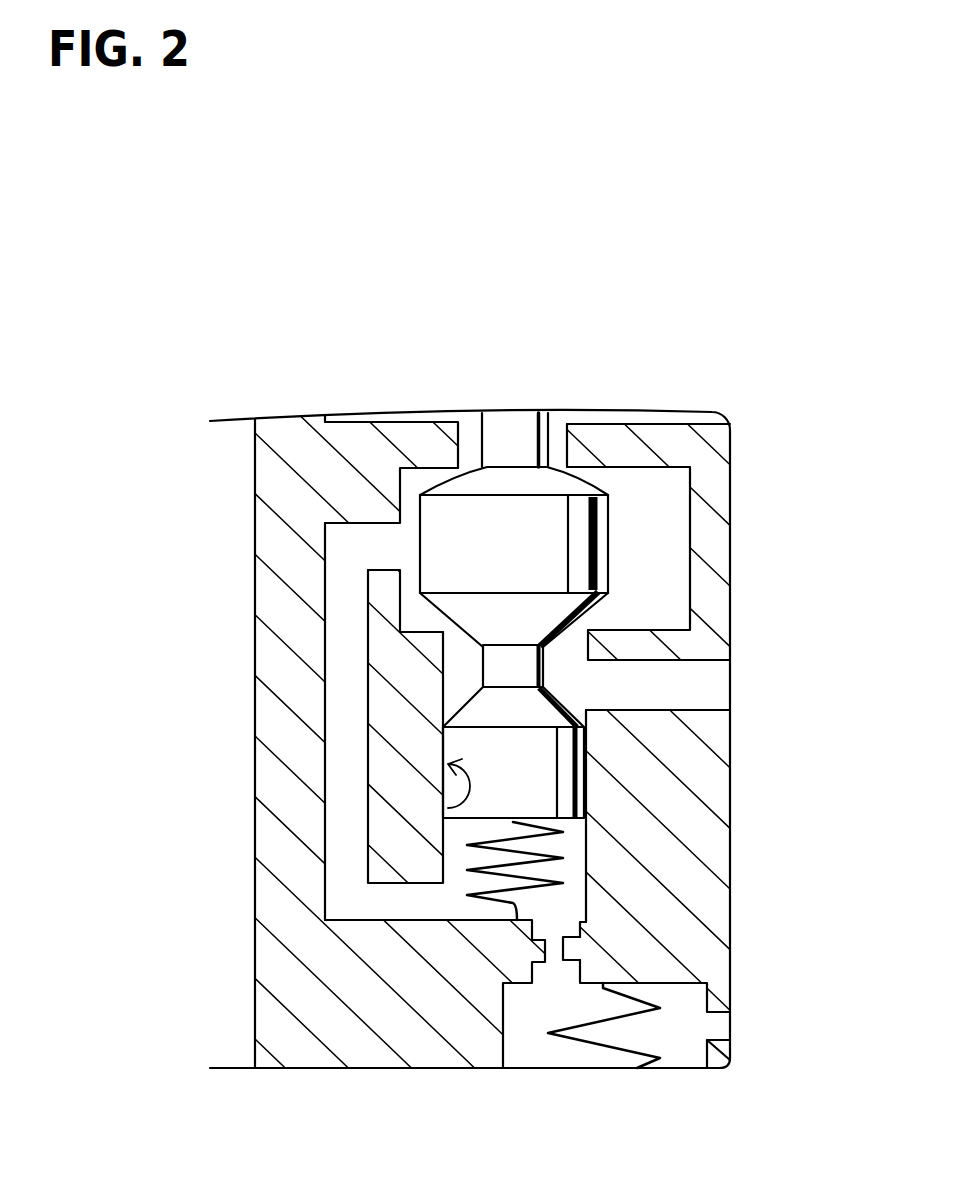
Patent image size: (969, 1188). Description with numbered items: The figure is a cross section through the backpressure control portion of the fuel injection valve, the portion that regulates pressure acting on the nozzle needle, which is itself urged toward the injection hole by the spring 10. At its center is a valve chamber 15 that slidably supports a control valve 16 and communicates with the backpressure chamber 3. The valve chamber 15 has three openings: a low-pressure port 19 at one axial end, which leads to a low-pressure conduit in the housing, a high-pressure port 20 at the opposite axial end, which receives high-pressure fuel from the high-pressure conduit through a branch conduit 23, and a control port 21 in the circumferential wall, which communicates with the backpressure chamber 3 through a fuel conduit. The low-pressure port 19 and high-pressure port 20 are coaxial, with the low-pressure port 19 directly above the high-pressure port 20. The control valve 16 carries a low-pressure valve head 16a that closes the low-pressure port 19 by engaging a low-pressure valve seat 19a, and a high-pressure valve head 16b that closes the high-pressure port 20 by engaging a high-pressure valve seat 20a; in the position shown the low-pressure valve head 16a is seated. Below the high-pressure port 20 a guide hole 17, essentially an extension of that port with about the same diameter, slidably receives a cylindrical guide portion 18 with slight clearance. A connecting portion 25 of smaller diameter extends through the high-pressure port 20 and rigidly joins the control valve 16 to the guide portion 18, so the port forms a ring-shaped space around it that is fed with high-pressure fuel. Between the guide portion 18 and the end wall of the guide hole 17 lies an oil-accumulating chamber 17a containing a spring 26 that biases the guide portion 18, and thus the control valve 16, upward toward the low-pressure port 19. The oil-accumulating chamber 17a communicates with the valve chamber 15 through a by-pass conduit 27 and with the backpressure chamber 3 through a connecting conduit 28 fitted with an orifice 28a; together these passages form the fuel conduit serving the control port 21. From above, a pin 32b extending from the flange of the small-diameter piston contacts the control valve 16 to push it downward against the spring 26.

The backpressure chamber 3 is at (522, 1055).
The spring 10 is at (585, 1043).
The valve chamber 15 is at (672, 555).
The control valve 16 is at (602, 528).
The low-pressure valve head 16a is at (565, 488).
The high-pressure valve head 16b is at (450, 613).
The guide hole 17 is at (443, 811).
The oil-accumulating chamber 17a is at (578, 882).
The guide portion 18 is at (588, 773).
The low-pressure port 19 is at (558, 448).
The low-pressure valve seat 19a is at (458, 466).
The high-pressure port 20 is at (577, 648).
The high-pressure valve seat 20a is at (590, 622).
The control port 21 is at (398, 540).
The branch conduit 23 is at (710, 683).
The connecting portion 25 is at (493, 662).
The spring 26 is at (580, 846).
The by-pass conduit 27 is at (340, 757).
The connecting conduit 28 is at (570, 973).
The orifice 28a is at (565, 942).
The pin 32b is at (508, 420).